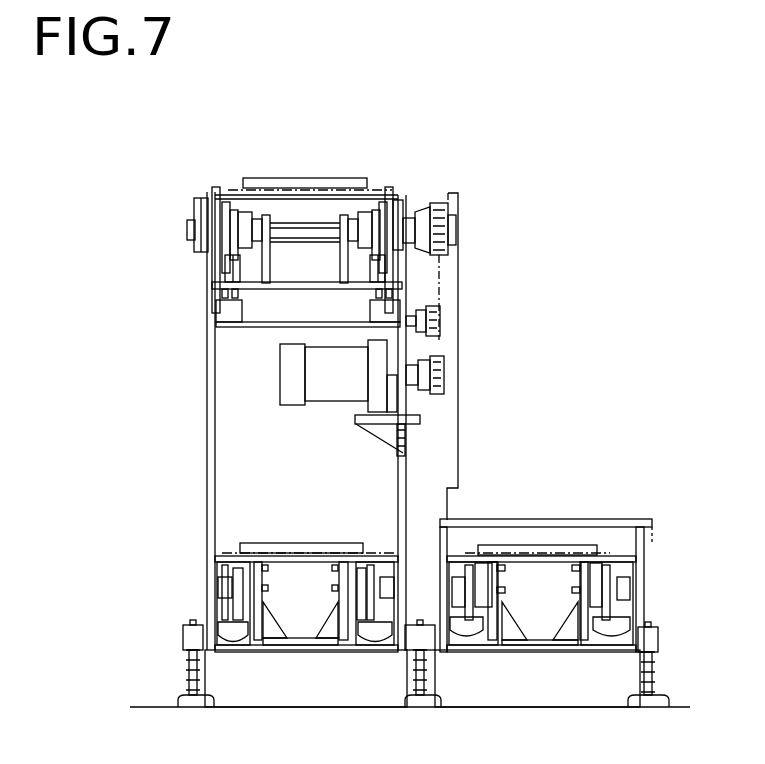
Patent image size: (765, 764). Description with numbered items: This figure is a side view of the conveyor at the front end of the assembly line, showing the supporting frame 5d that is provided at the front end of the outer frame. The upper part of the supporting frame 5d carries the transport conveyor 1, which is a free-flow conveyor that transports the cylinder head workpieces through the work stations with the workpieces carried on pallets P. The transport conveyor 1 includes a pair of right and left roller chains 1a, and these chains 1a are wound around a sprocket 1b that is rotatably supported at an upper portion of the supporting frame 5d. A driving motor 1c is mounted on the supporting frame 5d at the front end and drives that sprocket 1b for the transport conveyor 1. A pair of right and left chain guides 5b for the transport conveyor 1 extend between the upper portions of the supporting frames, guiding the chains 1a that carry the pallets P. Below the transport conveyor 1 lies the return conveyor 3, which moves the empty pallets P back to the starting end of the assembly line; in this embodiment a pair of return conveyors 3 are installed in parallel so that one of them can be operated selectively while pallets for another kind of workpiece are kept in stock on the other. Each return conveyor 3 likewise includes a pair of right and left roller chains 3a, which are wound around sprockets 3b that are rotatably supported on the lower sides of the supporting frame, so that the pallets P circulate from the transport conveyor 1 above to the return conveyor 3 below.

The transport conveyor 1 is at (318, 166).
The roller chains 1a is at (226, 212).
The sprocket 1b is at (218, 234).
The driving motor 1c is at (328, 390).
The return conveyor 3 is at (301, 535).
The roller chains 3a is at (231, 575).
The sprockets 3b is at (217, 587).
The chain guides 5b is at (383, 313).
The supporting frame 5d is at (207, 424).
The pallets P is at (274, 195).